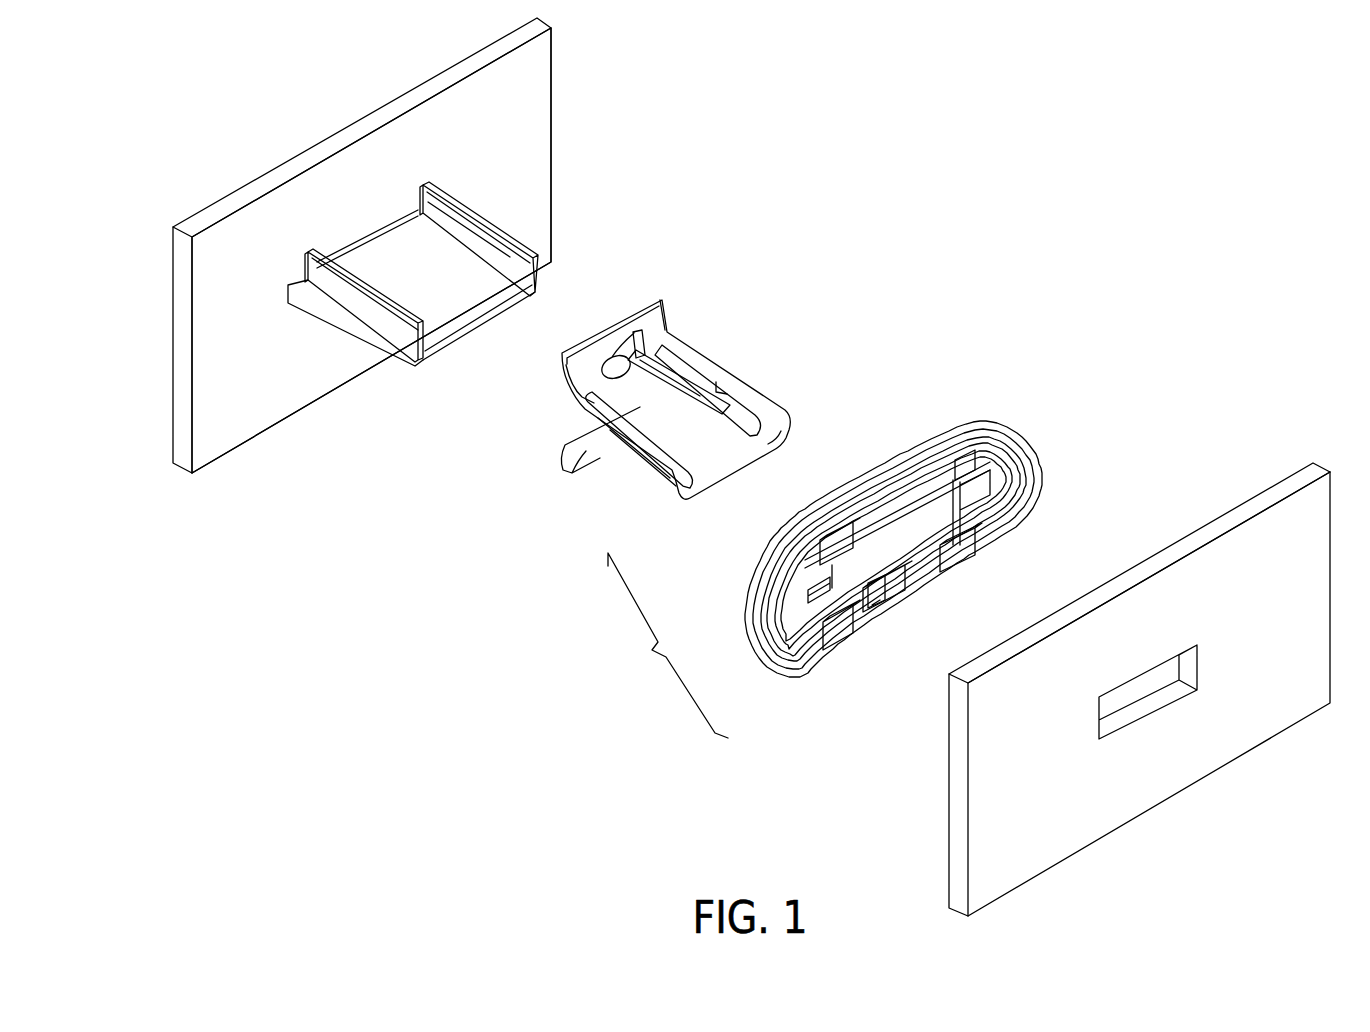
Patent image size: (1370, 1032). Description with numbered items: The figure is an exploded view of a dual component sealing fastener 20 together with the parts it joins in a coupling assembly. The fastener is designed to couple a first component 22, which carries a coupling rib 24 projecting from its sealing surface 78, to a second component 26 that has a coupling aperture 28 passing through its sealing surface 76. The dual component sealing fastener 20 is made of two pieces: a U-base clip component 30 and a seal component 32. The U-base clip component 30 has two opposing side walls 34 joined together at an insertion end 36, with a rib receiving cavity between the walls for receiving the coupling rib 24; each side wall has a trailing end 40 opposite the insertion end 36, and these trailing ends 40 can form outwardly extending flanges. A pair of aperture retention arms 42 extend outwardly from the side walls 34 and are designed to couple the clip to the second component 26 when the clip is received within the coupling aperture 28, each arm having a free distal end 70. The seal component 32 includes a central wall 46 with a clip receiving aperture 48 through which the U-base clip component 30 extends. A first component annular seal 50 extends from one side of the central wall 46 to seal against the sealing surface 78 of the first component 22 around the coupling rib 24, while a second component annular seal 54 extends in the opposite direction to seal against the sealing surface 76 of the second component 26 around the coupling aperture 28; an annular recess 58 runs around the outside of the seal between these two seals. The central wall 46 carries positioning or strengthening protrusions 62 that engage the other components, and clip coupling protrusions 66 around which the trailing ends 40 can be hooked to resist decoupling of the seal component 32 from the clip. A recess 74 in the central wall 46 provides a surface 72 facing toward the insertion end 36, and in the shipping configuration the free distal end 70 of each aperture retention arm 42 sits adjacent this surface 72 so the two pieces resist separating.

The dual component sealing fastener 20 is at (668, 645).
The first component 22 is at (362, 267).
The coupling rib 24 is at (453, 297).
The second component 26 is at (1139, 687).
The coupling aperture 28 is at (1158, 678).
The U-base clip component 30 is at (671, 435).
The seal component 32 is at (892, 562).
The opposing side walls 34 is at (738, 380).
The insertion end 36 is at (777, 418).
The trailing end 40 is at (563, 365).
The aperture retention arms 42 is at (672, 382).
The central wall 46 is at (992, 478).
The clip receiving aperture 48 is at (927, 518).
The first component annular seal 50 is at (750, 614).
The second component annular seal 54 is at (808, 547).
The annular recess 58 is at (785, 570).
The positioning or strengthening protrusions 62 is at (973, 561).
The clip coupling protrusions 66 is at (917, 580).
The free distal end 70 is at (626, 352).
The surface of the central wall 72 is at (880, 583).
The recess 74 is at (905, 553).
The sealing surface of the second component 76 is at (1243, 497).
The sealing surface of the first component 78 is at (279, 438).